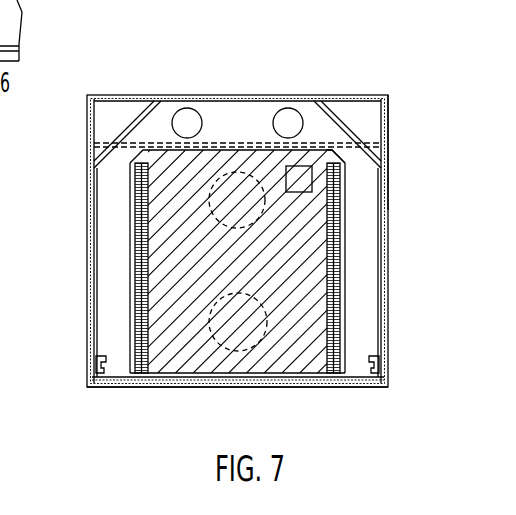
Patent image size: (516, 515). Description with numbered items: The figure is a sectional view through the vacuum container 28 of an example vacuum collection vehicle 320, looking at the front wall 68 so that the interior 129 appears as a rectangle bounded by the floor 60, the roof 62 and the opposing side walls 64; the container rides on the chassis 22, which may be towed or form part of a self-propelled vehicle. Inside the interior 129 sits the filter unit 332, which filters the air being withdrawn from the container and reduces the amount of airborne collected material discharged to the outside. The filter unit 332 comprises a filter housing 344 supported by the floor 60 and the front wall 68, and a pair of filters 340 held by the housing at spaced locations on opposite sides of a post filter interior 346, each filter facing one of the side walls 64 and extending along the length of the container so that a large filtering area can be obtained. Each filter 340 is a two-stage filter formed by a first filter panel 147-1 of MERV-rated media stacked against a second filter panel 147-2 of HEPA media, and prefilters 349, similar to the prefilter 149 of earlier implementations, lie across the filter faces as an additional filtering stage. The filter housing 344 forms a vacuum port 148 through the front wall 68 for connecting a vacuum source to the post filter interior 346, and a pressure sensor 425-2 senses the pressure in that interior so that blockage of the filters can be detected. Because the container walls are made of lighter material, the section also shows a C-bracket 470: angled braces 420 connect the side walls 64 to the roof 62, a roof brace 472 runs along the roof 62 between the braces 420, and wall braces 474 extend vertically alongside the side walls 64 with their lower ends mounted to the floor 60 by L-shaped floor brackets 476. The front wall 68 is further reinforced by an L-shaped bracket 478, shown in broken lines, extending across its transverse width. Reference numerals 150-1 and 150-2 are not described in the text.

The chassis 22 is at (365, 388).
The vacuum container 28 is at (389, 332).
The floor 60 is at (358, 382).
The roof 62 is at (113, 101).
The side walls 64 is at (90, 230).
The front wall 68 is at (105, 122).
The interior 129 is at (108, 268).
The first filter panel 147-1 is at (133, 357).
The second filter panel 147-2 is at (145, 373).
The vacuum port 148 is at (227, 294).
The prefilter 149 is at (215, 218).
The first terminal 150-1 is at (300, 110).
The second terminal 150-2 is at (210, 108).
The vacuum collection vehicle 320 is at (414, 115).
The filter unit 332 is at (128, 220).
The filters 340 is at (149, 300).
The filter housing 344 is at (243, 150).
The post filter interior 346 is at (302, 263).
The prefilters 349 is at (130, 316).
The braces 420 is at (134, 128).
The pressure sensor 425-2 is at (297, 193).
The C-bracket 470 is at (389, 176).
The roof brace 472 is at (286, 99).
The wall braces 474 is at (97, 300).
The L-shaped floor bracket 476 is at (100, 357).
The L-shaped bracket 478 is at (328, 150).